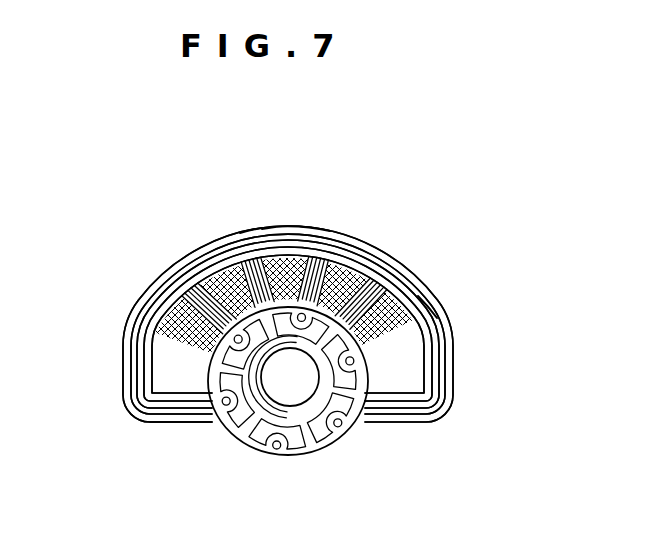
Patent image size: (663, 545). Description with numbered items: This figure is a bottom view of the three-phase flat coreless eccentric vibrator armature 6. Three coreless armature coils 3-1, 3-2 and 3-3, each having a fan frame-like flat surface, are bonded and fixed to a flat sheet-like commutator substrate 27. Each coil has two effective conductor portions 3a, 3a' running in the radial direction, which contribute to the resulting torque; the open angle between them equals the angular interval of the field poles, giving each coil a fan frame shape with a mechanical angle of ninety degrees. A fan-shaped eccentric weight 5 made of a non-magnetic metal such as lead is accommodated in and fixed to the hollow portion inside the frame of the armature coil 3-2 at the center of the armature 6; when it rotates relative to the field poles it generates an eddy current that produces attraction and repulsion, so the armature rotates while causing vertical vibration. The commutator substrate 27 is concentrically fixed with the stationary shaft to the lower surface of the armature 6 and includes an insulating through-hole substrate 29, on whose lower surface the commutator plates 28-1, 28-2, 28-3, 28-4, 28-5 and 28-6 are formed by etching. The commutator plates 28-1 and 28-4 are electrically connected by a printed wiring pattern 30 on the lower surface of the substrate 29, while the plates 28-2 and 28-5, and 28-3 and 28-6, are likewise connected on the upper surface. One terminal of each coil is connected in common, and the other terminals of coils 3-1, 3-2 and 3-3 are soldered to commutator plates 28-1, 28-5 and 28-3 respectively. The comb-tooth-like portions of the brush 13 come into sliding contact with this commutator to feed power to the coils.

The flat coreless eccentric vibrator armature 6 is at (427, 223).
The armature coil 3-1 is at (147, 328).
The armature coil 3-2 is at (300, 228).
The armature coil 3-3 is at (330, 328).
The effective conductor portion 3a is at (128, 439).
The effective conductor portion 3a' is at (240, 178).
The brush 13 is at (196, 262).
The eccentric weight 5 is at (380, 253).
The through-hole substrate 29 is at (353, 252).
The printed wiring pattern 30 is at (266, 228).
The commutator substrate 27 is at (240, 446).
The commutator plate 28-1 is at (383, 313).
The commutator plate 28-2 is at (368, 376).
The commutator plate 28-3 is at (352, 417).
The commutator plate 28-4 is at (293, 428).
The commutator plate 28-5 is at (245, 405).
The commutator plate 28-6 is at (260, 334).